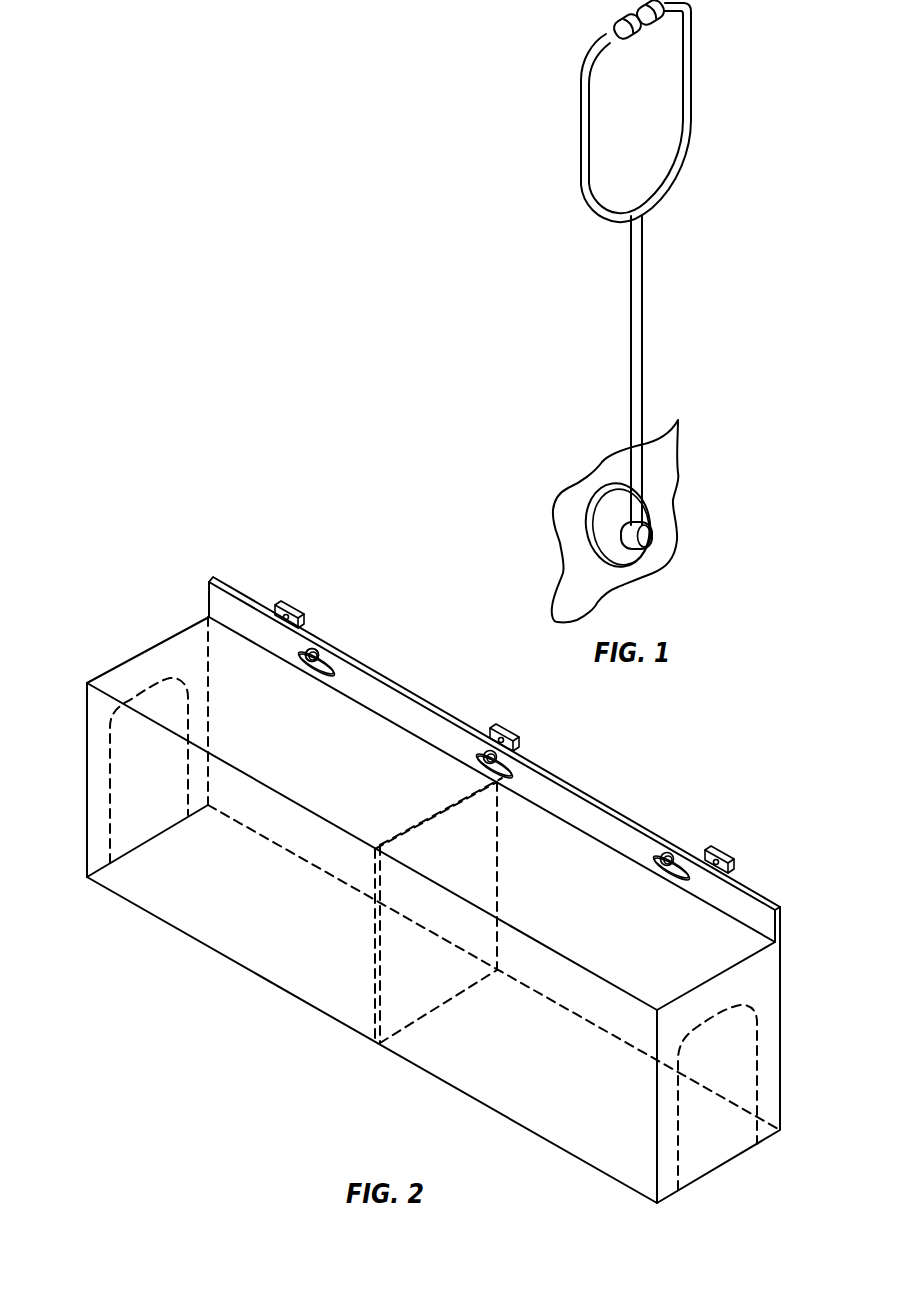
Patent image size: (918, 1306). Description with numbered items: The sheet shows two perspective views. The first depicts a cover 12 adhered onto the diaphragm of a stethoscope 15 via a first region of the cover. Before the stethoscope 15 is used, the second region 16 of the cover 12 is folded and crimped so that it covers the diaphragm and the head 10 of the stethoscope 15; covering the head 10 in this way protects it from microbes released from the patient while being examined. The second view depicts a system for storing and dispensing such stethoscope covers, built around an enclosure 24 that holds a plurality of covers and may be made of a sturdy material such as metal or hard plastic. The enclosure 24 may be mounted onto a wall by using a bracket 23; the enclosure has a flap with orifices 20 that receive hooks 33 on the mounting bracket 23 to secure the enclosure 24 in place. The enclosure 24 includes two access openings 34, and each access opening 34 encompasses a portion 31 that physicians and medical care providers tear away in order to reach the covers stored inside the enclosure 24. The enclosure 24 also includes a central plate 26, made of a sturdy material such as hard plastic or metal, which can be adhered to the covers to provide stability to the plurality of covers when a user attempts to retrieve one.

In FIG. 1, the head 10 is at (645, 538).
In FIG. 1, the cover 12 is at (602, 462).
In FIG. 1, the stethoscope 15 is at (636, 345).
In FIG. 1, the second region 16 is at (563, 515).
In FIG. 2, the orifices 20 is at (320, 662).
In FIG. 2, the bracket 23 is at (288, 606).
In FIG. 2, the enclosure 24 is at (180, 652).
In FIG. 2, the central plate 26 is at (430, 815).
In FIG. 2, the portion 31 is at (128, 752).
In FIG. 2, the hooks 33 is at (315, 650).
In FIG. 2, the access openings 34 is at (110, 763).